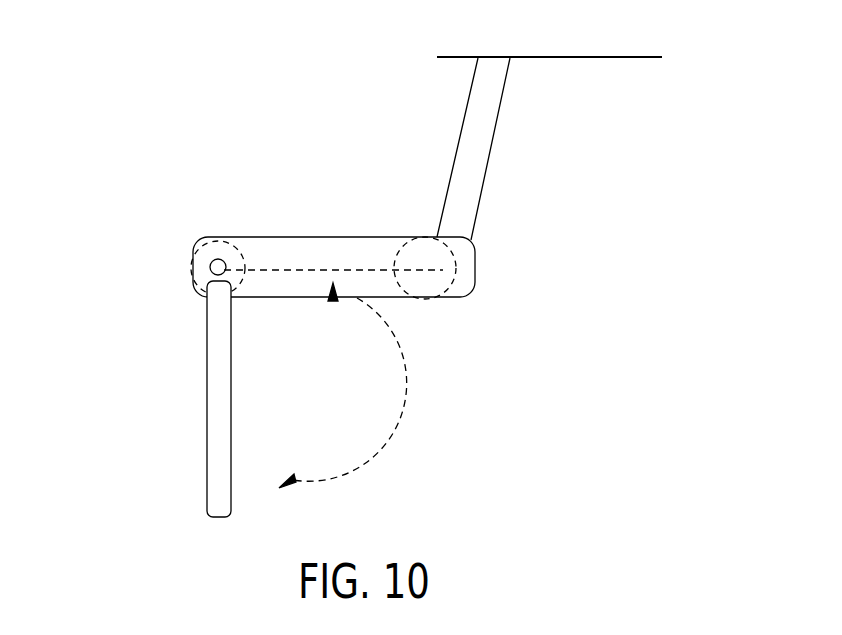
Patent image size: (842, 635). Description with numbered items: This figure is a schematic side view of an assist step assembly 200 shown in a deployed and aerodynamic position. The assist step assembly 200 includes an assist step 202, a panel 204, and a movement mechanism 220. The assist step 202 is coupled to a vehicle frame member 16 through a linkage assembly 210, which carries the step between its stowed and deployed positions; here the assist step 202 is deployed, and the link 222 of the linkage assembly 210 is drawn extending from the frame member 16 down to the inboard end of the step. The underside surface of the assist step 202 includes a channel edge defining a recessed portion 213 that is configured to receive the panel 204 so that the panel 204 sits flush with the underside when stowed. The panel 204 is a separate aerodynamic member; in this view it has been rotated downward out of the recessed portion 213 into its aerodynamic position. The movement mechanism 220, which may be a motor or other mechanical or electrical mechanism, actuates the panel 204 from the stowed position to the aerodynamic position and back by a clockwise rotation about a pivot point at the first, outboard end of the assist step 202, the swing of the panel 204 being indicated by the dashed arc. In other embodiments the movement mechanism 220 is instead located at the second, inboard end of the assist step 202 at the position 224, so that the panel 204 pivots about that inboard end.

The assist step assembly 200 is at (140, 132).
The frame member 16 is at (535, 60).
The linkage assembly 210 is at (413, 182).
The seat back support member 222 is at (468, 95).
The assist step 202 is at (326, 250).
The movement mechanism 220 is at (205, 240).
The position 224 is at (440, 280).
The panel 204 is at (208, 382).
The recessed portion 213 is at (333, 302).